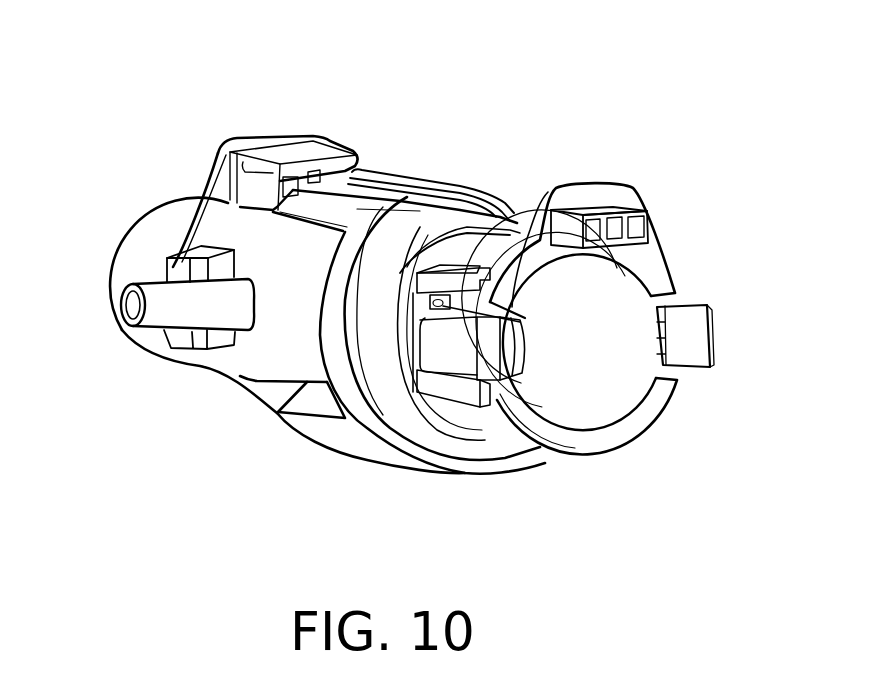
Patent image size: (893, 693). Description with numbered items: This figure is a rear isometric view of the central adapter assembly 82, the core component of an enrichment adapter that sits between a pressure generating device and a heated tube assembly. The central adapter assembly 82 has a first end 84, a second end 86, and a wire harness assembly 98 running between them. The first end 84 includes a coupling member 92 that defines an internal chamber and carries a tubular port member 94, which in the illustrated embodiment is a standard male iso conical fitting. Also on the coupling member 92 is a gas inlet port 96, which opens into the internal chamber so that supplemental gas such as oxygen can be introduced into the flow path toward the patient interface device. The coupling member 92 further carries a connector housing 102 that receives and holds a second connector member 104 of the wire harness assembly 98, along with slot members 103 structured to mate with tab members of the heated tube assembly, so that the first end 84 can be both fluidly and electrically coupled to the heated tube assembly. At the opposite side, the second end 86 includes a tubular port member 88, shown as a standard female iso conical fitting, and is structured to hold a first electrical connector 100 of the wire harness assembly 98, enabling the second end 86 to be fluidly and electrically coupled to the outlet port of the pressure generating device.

The central adapter assembly 82 is at (548, 97).
The first end 84 is at (203, 360).
The second end 86 is at (527, 452).
The tubular port member 88 is at (663, 273).
The coupling member 92 is at (277, 372).
The tubular port member 94 is at (140, 220).
The gas inlet port 96 is at (143, 357).
The wire harness assembly 98 is at (427, 175).
The first electrical connector 100 is at (650, 213).
The connector housing 102 is at (237, 186).
The slot members 103 is at (168, 257).
The second connector member 104 is at (290, 151).